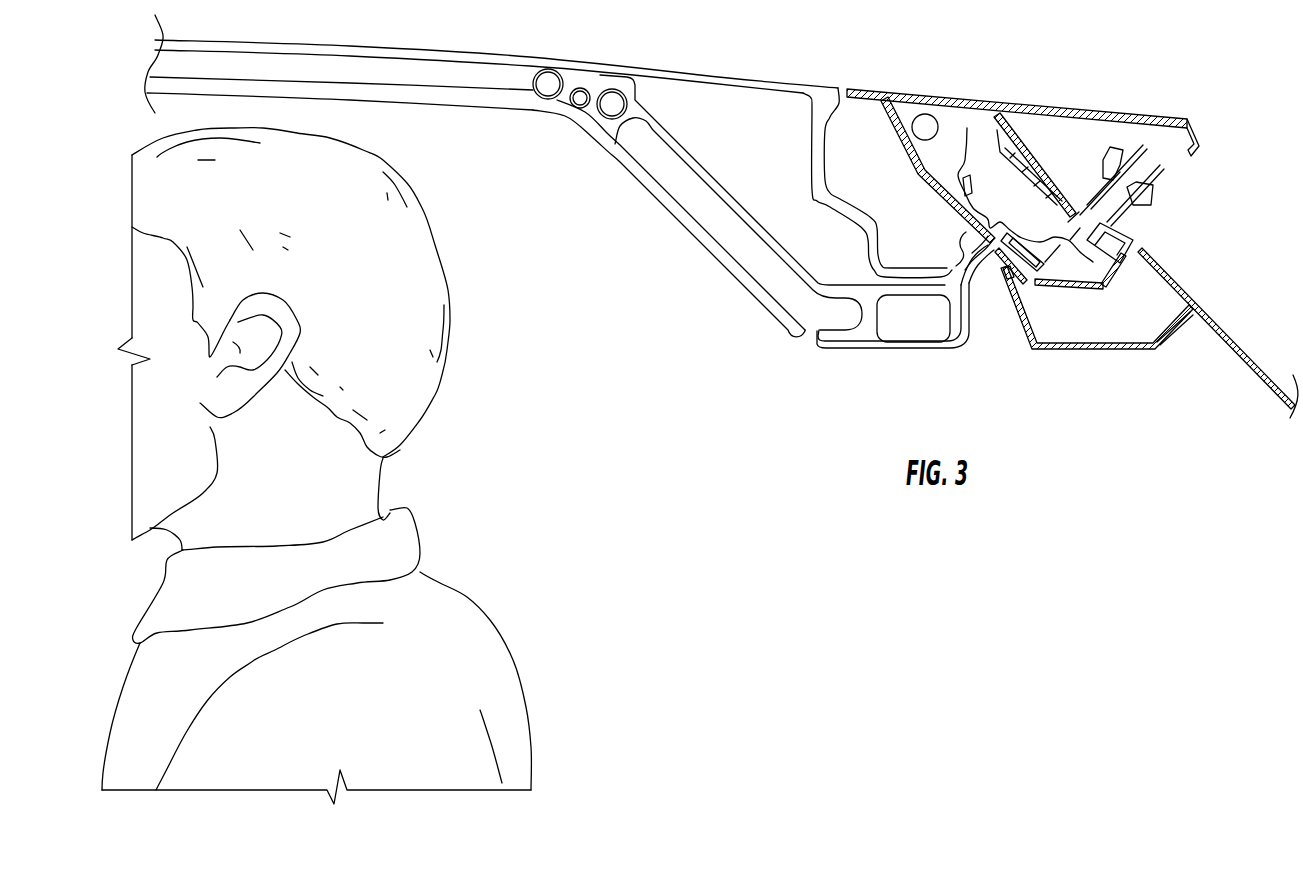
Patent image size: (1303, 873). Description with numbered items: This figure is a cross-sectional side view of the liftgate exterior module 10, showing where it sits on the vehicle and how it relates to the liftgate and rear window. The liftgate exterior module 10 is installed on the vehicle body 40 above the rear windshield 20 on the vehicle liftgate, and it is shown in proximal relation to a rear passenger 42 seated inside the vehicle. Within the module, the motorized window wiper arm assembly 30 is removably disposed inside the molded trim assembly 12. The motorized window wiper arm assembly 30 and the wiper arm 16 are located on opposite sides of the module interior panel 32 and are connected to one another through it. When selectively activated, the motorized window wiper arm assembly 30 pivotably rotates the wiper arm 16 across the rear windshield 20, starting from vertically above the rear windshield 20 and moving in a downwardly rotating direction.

The liftgate exterior module 10 is at (980, 66).
The molded trim assembly 12 is at (1110, 110).
The wiper arm 16 is at (1150, 197).
The rear windshield 20 is at (1240, 345).
The motorized window wiper arm assembly 30 is at (992, 177).
The module interior panel 32 is at (1120, 228).
The vehicle body 40 is at (508, 63).
The rear passenger 42 is at (443, 617).